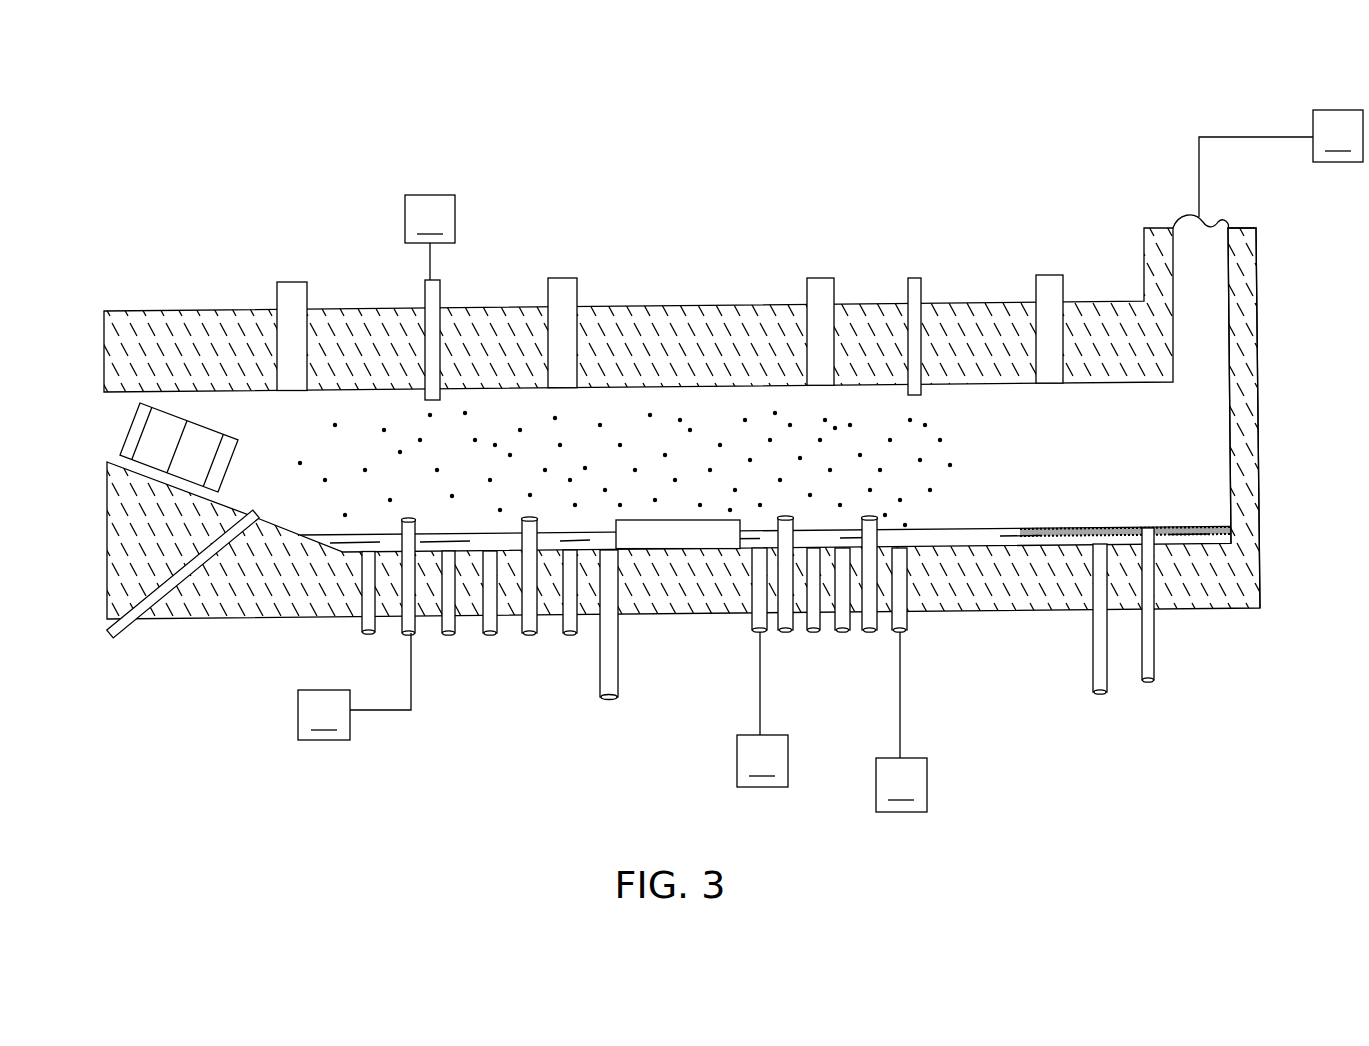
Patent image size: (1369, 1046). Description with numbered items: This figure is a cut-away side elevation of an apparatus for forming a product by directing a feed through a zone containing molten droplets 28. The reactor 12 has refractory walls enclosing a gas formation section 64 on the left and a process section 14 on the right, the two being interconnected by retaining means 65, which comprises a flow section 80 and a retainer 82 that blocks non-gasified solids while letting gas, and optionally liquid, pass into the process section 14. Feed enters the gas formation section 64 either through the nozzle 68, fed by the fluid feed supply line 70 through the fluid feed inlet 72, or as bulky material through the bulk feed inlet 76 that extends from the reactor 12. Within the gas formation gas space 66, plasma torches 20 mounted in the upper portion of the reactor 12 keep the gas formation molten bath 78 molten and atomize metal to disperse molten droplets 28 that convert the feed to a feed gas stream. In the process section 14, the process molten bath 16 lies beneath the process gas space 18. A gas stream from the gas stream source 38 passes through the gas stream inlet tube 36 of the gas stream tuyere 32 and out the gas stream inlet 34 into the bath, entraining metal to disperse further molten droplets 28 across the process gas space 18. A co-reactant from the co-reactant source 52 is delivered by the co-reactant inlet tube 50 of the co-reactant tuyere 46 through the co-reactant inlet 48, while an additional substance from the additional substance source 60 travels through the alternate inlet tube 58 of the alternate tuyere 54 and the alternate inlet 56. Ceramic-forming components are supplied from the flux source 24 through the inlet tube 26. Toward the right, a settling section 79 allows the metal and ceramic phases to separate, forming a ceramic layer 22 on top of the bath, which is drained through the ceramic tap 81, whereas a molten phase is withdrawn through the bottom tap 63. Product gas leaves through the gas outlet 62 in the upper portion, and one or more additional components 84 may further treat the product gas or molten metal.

The reactor 12 is at (188, 622).
The process section 14 is at (860, 462).
The process molten bath 16 is at (1007, 563).
The process gas space 18 is at (867, 417).
The plasma torches 20 is at (290, 282).
The ceramic layer 22 is at (1217, 522).
The flux source 24 is at (430, 237).
The inlet tube 26 is at (440, 290).
The molten droplets 28 is at (337, 462).
The gas stream tuyere 32 is at (758, 560).
The gas stream inlet 34 is at (757, 540).
The gas stream inlet tube 36 is at (360, 637).
The gas stream source 38 is at (762, 709).
The co-reactant tuyere 46 is at (416, 532).
The co-reactant inlet 48 is at (407, 518).
The co-reactant inlet tube 50 is at (404, 637).
The co-reactant source 52 is at (354, 686).
The alternate tuyere 54 is at (895, 562).
The alternate inlet 56 is at (892, 548).
The alternate inlet tube 58 is at (901, 722).
The additional substance source 60 is at (572, 634).
The gas outlet 62 is at (1237, 227).
The bottom tap 63 is at (1090, 669).
The gas formation section 64 is at (403, 425).
The retaining means 65 is at (666, 445).
The gas formation gas space 66 is at (453, 440).
The nozzle 68 is at (253, 515).
The fluid feed supply line 70 is at (148, 587).
The fluid feed inlet 72 is at (258, 512).
The bulk feed inlet 76 is at (107, 462).
The gas formation molten bath 78 is at (330, 548).
The settling section 79 is at (1123, 463).
The flow section 80 is at (707, 447).
The ceramic tap 81 is at (1157, 650).
The retainer 82 is at (670, 520).
The additional components 84 is at (1281, 163).